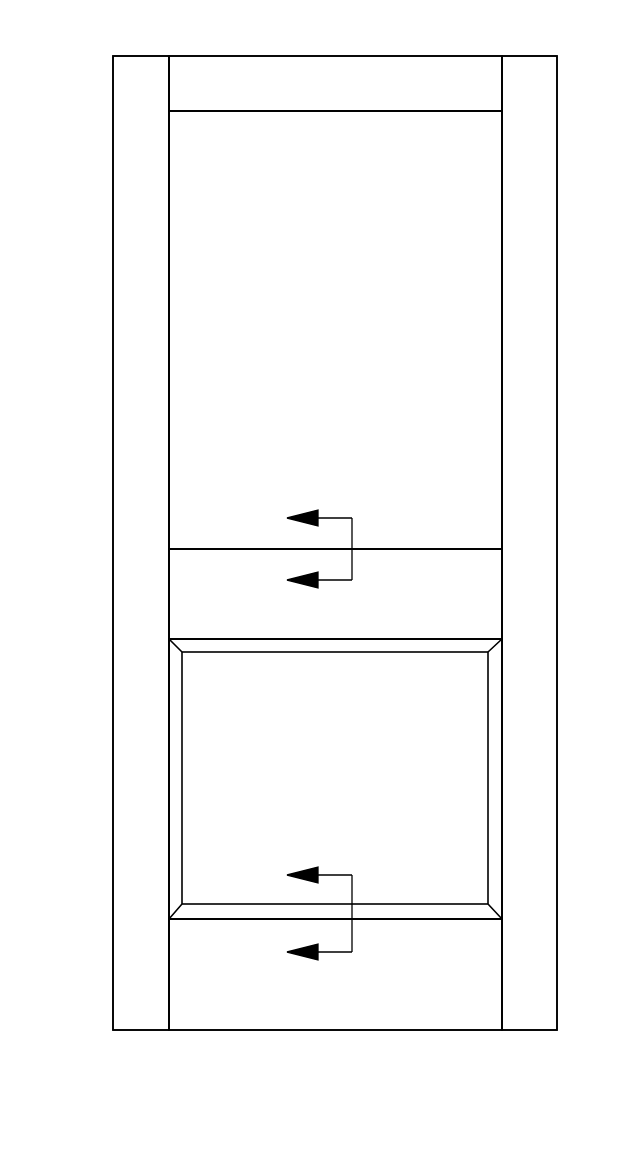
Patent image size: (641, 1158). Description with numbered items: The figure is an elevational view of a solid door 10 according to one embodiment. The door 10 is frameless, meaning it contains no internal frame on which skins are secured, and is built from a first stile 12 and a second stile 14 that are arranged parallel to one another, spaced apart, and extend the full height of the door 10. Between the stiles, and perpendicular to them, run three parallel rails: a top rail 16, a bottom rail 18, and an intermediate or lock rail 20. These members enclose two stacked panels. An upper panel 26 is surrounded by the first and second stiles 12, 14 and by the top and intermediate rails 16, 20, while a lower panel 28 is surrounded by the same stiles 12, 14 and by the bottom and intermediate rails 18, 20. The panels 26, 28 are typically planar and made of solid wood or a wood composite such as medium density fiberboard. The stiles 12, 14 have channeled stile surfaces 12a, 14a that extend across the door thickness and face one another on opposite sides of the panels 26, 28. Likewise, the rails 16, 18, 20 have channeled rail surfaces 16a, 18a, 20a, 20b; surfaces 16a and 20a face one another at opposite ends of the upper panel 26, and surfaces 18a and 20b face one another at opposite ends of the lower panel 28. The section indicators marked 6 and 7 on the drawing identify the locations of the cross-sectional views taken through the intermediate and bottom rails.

The solid door 10 is at (84, 89).
The first stile 12 is at (122, 218).
The channeled stile surface 12a is at (169, 336).
The second stile 14 is at (548, 217).
The channeled stile surface 14a is at (501, 336).
The top rail 16 is at (228, 67).
The channeled rail surface 16a is at (335, 111).
The bottom rail 18 is at (193, 985).
The channeled rail surface 18a is at (458, 919).
The intermediate (lock) rail 20 is at (193, 619).
The channeled rail surface 20a is at (457, 549).
The channeled rail surface 20b is at (360, 640).
The upper panel 26 is at (348, 281).
The lower panel 28 is at (347, 793).
The section line 6,6A 6 is at (271, 552).
The section line 7 is at (307, 915).